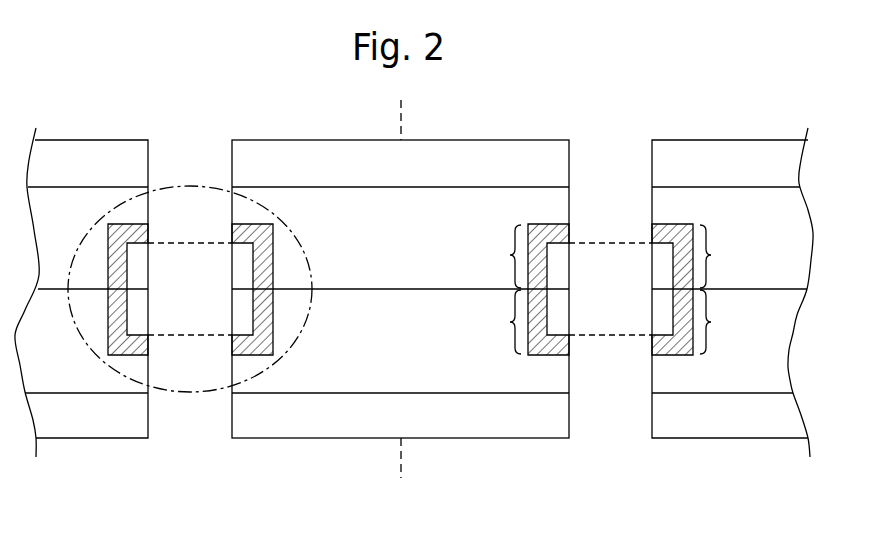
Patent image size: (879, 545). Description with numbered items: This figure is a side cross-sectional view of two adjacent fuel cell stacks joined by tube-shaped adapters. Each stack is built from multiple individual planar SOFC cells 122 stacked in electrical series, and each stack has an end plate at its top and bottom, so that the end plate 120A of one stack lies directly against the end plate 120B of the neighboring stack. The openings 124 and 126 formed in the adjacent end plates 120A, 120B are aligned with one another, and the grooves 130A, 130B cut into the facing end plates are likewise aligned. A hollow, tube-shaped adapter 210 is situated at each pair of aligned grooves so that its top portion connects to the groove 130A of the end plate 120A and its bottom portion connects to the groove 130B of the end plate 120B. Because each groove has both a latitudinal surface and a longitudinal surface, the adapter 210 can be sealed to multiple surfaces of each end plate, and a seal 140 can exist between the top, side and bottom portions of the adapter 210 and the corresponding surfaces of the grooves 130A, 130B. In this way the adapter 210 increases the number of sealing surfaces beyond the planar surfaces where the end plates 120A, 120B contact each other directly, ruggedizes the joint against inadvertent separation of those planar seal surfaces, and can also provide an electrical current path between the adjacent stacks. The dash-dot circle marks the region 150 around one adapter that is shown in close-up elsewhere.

The planar SOFC cells 122 is at (93, 157).
The end plate 120A is at (82, 221).
The end plate 120B is at (72, 376).
The opening 124 is at (625, 224).
The opening 126 is at (230, 288).
The groove 130A is at (608, 256).
The groove 130B is at (608, 322).
The seal 140 is at (273, 323).
The region 150 is at (311, 269).
The adapter 210 is at (224, 275).